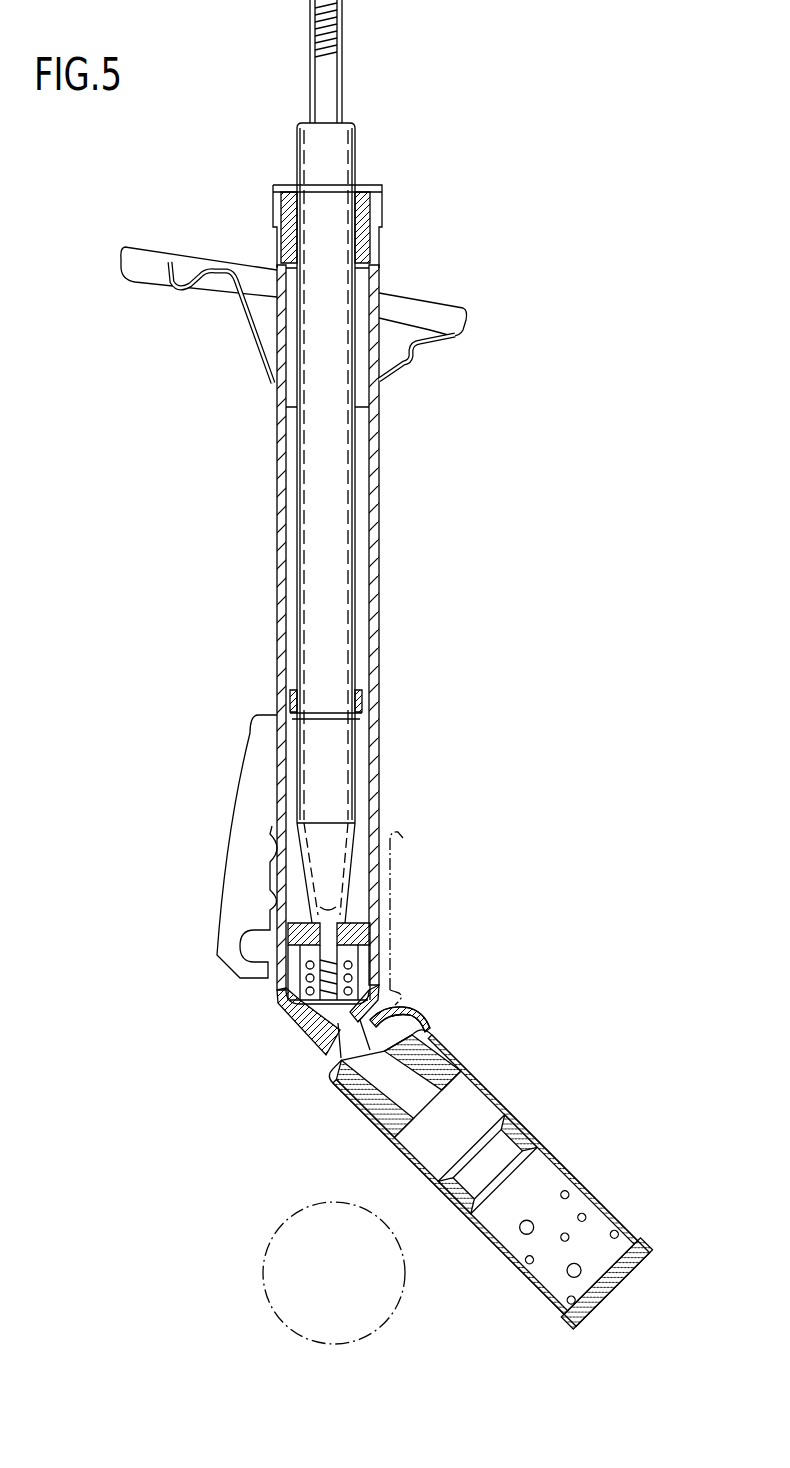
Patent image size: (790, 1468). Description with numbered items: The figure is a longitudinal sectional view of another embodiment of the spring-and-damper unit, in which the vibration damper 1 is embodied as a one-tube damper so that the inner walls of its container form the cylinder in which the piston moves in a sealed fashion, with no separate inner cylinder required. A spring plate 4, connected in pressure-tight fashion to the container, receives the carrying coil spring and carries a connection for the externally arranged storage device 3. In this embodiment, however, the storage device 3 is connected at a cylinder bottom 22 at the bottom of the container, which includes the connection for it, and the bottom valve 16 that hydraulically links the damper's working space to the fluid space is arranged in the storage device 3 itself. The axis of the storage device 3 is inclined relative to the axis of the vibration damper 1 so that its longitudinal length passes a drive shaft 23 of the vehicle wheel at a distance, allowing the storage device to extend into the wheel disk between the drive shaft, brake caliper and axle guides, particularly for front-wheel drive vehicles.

The vibration damper 1 is at (388, 556).
The storage device 3 is at (546, 1131).
The spring plate 4 is at (463, 332).
The bottom valve 16 is at (425, 1022).
The cylinder bottom 22 is at (308, 1025).
The drive shaft 23 is at (300, 1245).